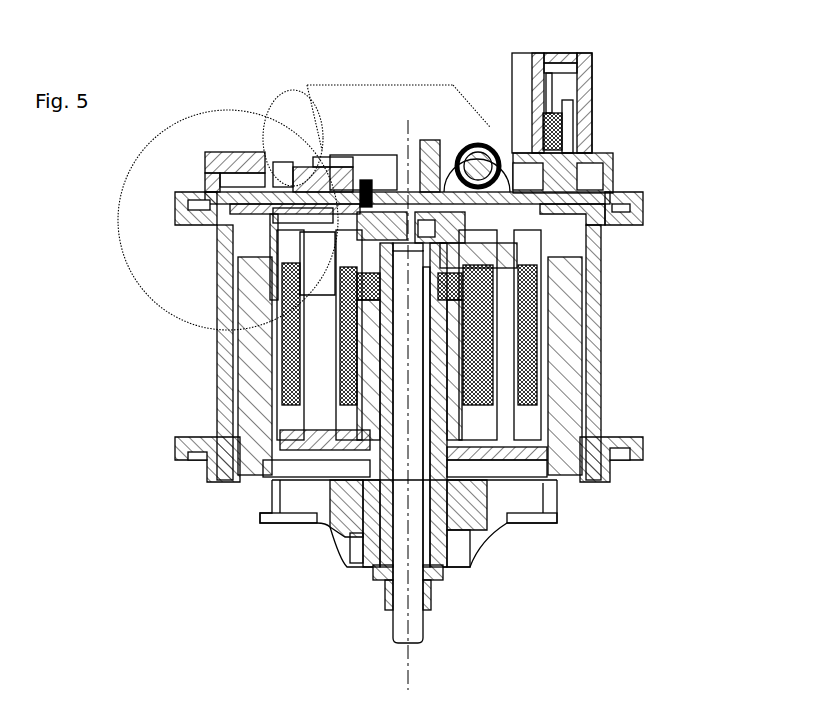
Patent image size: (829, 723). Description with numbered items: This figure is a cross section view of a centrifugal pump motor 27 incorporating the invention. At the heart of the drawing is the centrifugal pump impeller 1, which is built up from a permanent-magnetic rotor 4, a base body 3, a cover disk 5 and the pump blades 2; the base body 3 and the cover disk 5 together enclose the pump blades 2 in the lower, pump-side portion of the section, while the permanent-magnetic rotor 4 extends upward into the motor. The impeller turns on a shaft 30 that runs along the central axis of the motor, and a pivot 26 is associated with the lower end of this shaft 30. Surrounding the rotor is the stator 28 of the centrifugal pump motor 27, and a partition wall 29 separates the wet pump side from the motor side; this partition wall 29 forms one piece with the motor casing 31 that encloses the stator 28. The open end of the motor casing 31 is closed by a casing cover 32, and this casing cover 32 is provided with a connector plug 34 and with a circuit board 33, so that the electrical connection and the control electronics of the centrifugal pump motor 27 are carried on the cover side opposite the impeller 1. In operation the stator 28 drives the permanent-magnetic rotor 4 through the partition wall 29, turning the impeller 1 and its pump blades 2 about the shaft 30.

The centrifugal pump impeller 1 is at (312, 542).
The pump blades 2 is at (526, 502).
The base body 3 is at (530, 484).
The permanent-magnetic rotor 4 is at (250, 387).
The cover disk 5 is at (495, 525).
The pivot 26 is at (410, 620).
The centrifugal pump motor 27 is at (608, 304).
The stator 28 is at (525, 371).
The partition wall 29 is at (265, 409).
The shaft 30 is at (398, 628).
The motor casing 31 is at (220, 343).
The casing cover 32 is at (268, 191).
The circuit board 33 is at (300, 193).
The connector plug 34 is at (590, 127).